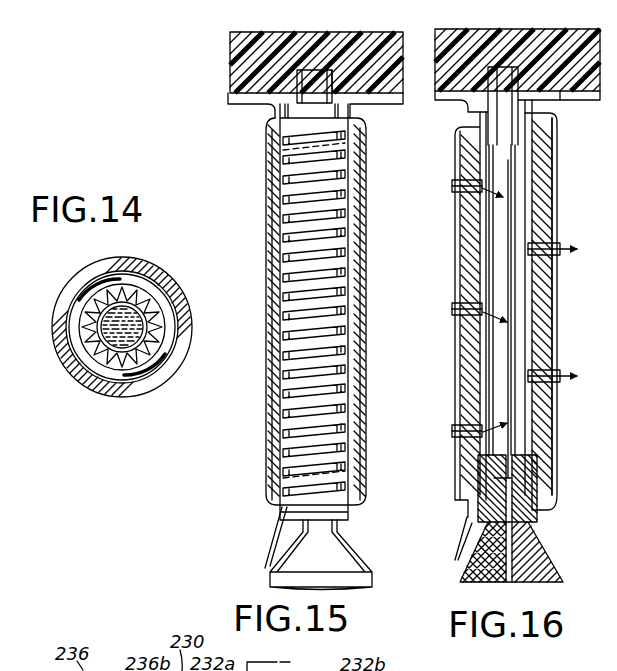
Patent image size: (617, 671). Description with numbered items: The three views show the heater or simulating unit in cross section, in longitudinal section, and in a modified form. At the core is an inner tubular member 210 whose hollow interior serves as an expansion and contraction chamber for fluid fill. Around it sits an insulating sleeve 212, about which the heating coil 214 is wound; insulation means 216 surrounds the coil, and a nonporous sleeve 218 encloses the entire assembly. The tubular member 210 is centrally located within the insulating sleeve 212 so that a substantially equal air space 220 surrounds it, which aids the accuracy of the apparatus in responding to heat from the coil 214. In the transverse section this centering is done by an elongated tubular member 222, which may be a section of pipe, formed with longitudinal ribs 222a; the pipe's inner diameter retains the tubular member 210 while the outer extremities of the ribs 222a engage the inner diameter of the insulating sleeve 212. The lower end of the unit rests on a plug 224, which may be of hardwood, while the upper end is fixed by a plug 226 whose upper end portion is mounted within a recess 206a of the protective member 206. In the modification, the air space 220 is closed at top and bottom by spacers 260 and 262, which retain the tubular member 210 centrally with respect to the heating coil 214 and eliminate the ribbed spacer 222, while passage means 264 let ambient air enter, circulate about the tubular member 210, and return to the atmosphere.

In FIG. 15, the protective member 206 is at (240, 75).
In FIG. 16, the protective member 206 is at (490, 37).
In FIG. 15, the recess 206a is at (355, 78).
In FIG. 16, the recess 206a is at (563, 77).
In FIG. 14, the inner tubular member 210 is at (97, 337).
In FIG. 16, the inner tubular member 210 is at (510, 335).
In FIG. 14, the insulating sleeve 212 is at (188, 313).
In FIG. 16, the insulating sleeve 212 is at (547, 347).
In FIG. 14, the heating coil 214 is at (187, 352).
In FIG. 15, the heating coil 214 is at (290, 190).
In FIG. 16, the heating coil 214 is at (547, 277).
In FIG. 14, the insulation means 216 is at (170, 373).
In FIG. 15, the insulation means 216 is at (278, 483).
In FIG. 16, the insulation means 216 is at (543, 443).
In FIG. 14, the nonporous sleeve 218 is at (63, 367).
In FIG. 15, the nonporous sleeve 218 is at (283, 400).
In FIG. 16, the nonporous sleeve 218 is at (547, 460).
In FIG. 16, the air space 220 is at (527, 427).
In FIG. 14, the elongated tubular member 222 is at (152, 294).
In FIG. 14, the longitudinal ribs 222a is at (153, 312).
In FIG. 14, the plug 224 is at (113, 345).
In FIG. 15, the plug 224 is at (350, 565).
In FIG. 16, the plug 224 is at (543, 562).
In FIG. 15, the plug 226 is at (305, 78).
In FIG. 16, the plug 226 is at (503, 102).
In FIG. 16, the spacer 260 is at (545, 120).
In FIG. 16, the spacer 262 is at (536, 510).
In FIG. 16, the passage means 264 is at (462, 195).